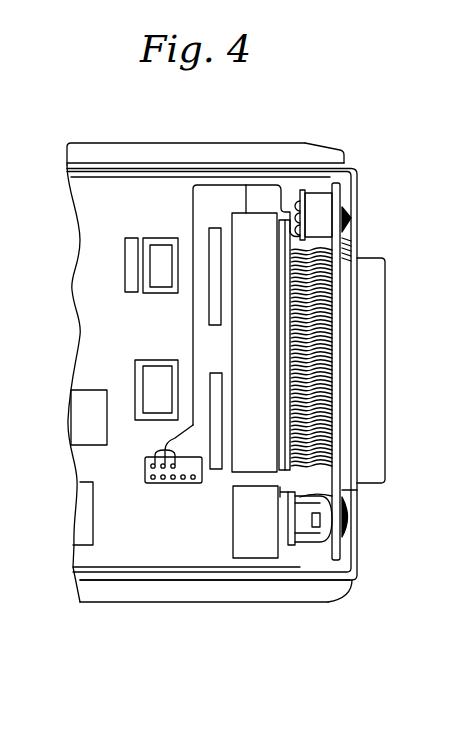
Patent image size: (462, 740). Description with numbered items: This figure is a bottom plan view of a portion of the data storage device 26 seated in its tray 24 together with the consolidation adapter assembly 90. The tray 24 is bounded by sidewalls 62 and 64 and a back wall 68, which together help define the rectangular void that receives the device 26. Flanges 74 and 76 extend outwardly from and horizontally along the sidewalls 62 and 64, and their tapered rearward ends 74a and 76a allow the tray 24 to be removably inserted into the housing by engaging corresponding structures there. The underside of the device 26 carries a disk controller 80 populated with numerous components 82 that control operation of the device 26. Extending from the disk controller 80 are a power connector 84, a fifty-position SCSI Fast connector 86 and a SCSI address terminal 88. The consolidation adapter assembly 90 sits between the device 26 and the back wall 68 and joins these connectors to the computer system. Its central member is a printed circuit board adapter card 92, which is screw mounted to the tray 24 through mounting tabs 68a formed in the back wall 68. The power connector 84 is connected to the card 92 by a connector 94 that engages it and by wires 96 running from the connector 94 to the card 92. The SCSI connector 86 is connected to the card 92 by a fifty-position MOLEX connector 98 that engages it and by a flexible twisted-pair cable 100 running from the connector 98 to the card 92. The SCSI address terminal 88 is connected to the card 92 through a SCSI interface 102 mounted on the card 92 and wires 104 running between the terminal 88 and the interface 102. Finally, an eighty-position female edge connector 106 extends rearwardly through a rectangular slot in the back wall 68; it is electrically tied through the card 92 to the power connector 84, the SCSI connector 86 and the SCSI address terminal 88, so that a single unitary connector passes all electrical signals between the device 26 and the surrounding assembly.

The tray 24 is at (100, 141).
The device 26 is at (162, 203).
The sidewall 62 is at (237, 163).
The sidewall 64 is at (240, 580).
The back wall 68 is at (358, 187).
The mounting tabs 68a is at (352, 252).
The flange 74 is at (208, 143).
The tapered rearward end 74a is at (327, 139).
The flange 76 is at (128, 603).
The tapered rearward end 76a is at (333, 603).
The disk controller 80 is at (137, 210).
The components 82 is at (145, 268).
The power connector 84 is at (233, 537).
The SCSI Fast connector 86 is at (238, 472).
The SCSI address terminal 88 is at (157, 483).
The consolidation adapter assembly 90 is at (405, 370).
The printed circuit board adapter card 92 is at (343, 553).
The connector 94 is at (283, 547).
The wires 96 is at (317, 497).
The MOLEX connector 98 is at (285, 338).
The flexible twisted-pair cable 100 is at (318, 262).
The SCSI interface 102 is at (318, 192).
The wires 104 is at (188, 308).
The female edge connector 106 is at (378, 382).